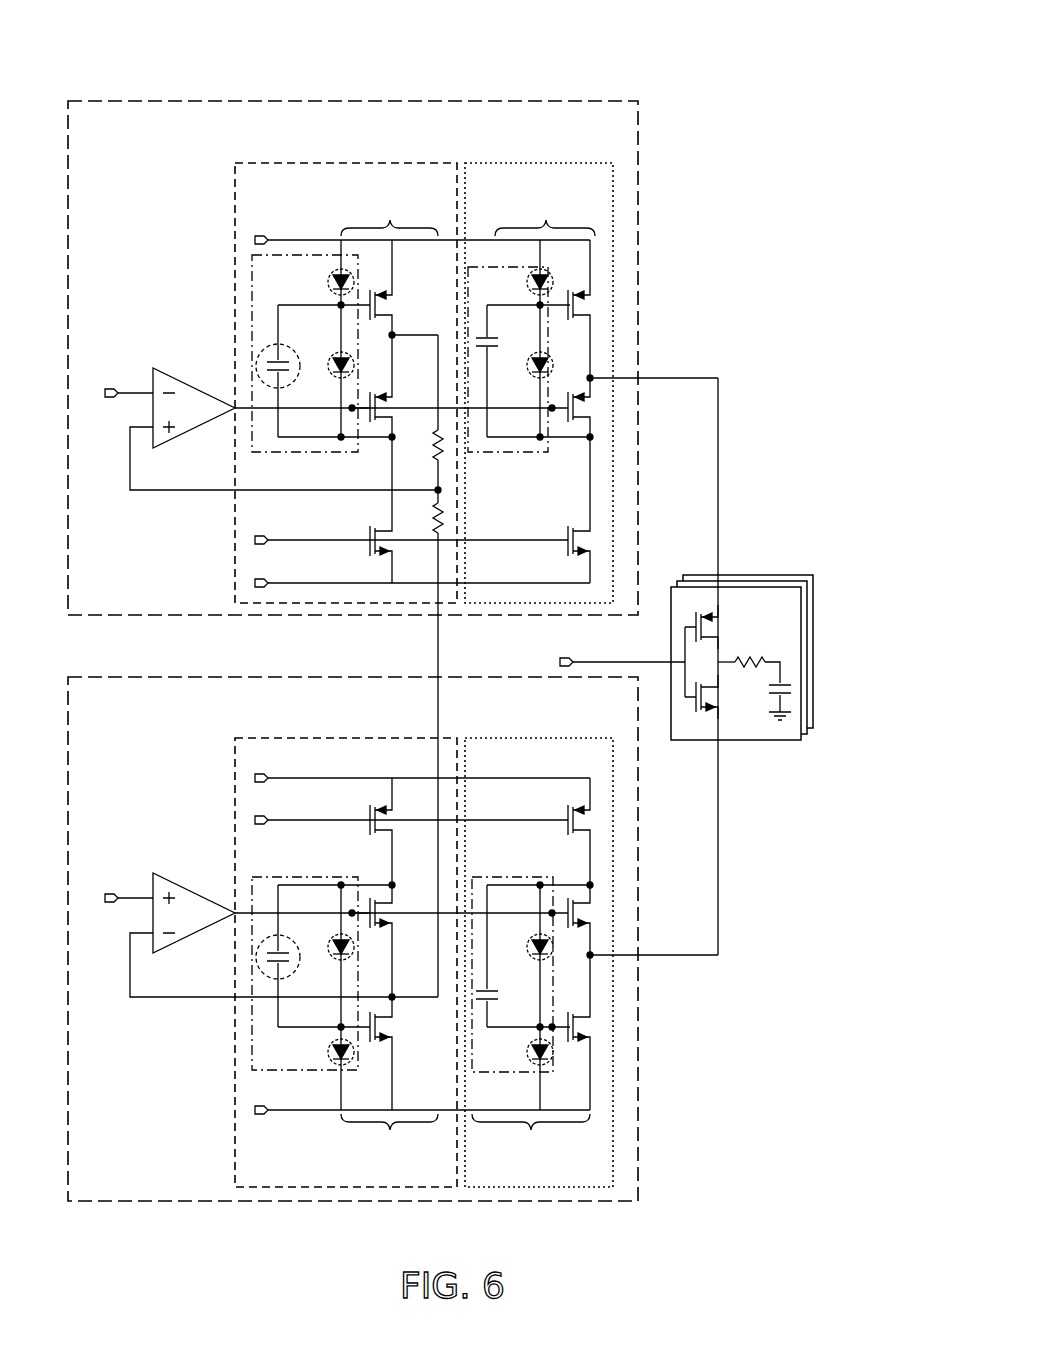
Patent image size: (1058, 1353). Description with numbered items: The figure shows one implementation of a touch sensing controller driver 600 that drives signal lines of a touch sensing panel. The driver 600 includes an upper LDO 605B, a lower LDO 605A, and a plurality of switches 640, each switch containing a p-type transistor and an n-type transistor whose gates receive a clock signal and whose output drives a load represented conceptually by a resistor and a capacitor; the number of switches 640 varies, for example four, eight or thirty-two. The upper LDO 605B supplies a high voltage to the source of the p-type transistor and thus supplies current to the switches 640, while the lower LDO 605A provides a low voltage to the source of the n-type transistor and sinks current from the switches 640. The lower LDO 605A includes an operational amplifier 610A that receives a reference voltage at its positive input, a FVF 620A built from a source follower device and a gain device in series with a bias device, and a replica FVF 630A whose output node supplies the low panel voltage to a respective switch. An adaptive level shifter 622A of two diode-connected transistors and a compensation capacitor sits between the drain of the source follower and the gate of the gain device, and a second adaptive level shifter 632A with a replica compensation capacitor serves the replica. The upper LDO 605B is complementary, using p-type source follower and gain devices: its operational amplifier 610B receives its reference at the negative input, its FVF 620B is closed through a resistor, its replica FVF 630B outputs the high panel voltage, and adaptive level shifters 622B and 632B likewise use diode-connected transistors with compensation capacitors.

The touch sensing controller driver 600 is at (609, 74).
The upper LDO 605B is at (152, 100).
The lower LDO 605A is at (152, 676).
The operational amplifier 610B is at (172, 366).
The operational amplifier 610A is at (172, 871).
The FVF 620B is at (287, 160).
The FVF 620A is at (287, 736).
The adaptive level shifter 622B is at (302, 452).
The adaptive level shifter 622A is at (302, 876).
The replica FVF 630B is at (563, 160).
The replica FVF 630A is at (563, 736).
The adaptive level shifter 632B is at (500, 452).
The adaptive level shifter 632A is at (515, 876).
The switches 640 is at (800, 516).